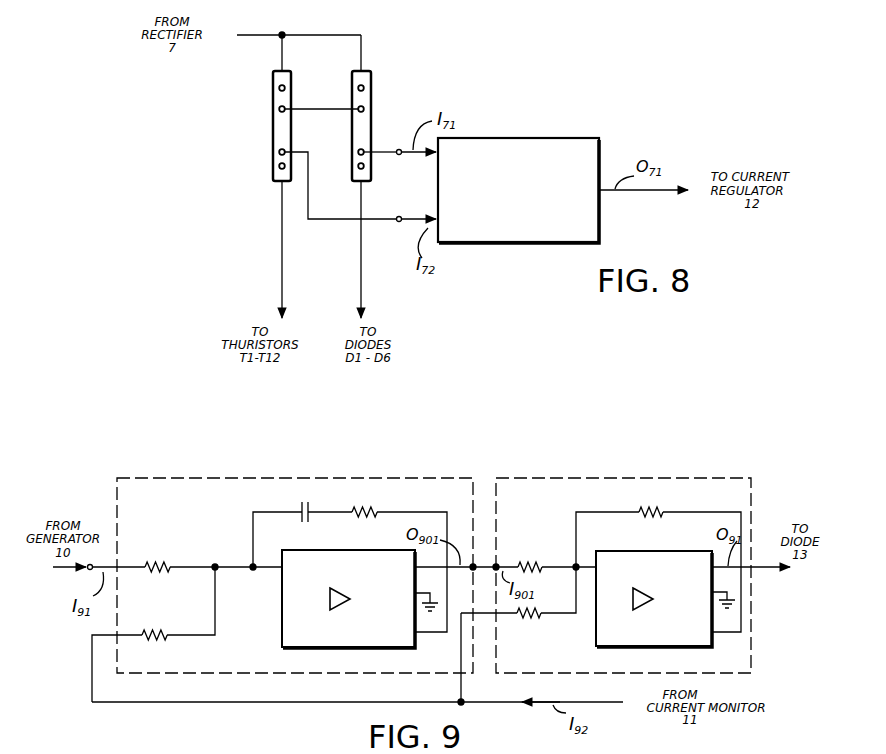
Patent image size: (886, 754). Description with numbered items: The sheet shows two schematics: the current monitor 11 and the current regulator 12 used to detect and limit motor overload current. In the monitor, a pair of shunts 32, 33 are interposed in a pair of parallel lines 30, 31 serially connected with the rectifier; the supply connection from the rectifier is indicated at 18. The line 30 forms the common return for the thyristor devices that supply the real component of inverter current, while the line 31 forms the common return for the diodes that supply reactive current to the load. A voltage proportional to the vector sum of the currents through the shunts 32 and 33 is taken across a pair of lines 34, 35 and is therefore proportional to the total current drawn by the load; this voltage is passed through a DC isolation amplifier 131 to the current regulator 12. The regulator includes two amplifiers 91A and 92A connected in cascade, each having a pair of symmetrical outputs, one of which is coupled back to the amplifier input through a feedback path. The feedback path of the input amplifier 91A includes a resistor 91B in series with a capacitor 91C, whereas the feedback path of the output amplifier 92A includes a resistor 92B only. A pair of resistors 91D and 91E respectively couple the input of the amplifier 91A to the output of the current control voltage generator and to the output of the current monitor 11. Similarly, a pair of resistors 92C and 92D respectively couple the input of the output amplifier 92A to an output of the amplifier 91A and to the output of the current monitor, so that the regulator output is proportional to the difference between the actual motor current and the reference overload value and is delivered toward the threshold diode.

In FIG. 8, the rectifier supply line 18 is at (266, 15).
In FIG. 8, the line 30 is at (282, 50).
In FIG. 8, the line 31 is at (366, 48).
In FIG. 8, the shunt 32 is at (273, 129).
In FIG. 8, the shunt 33 is at (372, 123).
In FIG. 8, the line 34 is at (374, 223).
In FIG. 8, the line 35 is at (386, 155).
In FIG. 8, the current monitor 11 is at (530, 94).
In FIG. 8, the DC isolation amplifier 131 is at (517, 243).
In FIG. 9, the current regulator 12 is at (507, 469).
In FIG. 9, the input amplifier 91A is at (325, 650).
In FIG. 9, the resistor 91B is at (366, 508).
In FIG. 9, the capacitor 91C is at (298, 509).
In FIG. 9, the resistor 91D is at (151, 566).
In FIG. 9, the resistor 91E is at (150, 643).
In FIG. 9, the output amplifier 92A is at (630, 648).
In FIG. 9, the resistor 92B is at (650, 508).
In FIG. 9, the resistor 92C is at (524, 563).
In FIG. 9, the resistor 92D is at (522, 619).